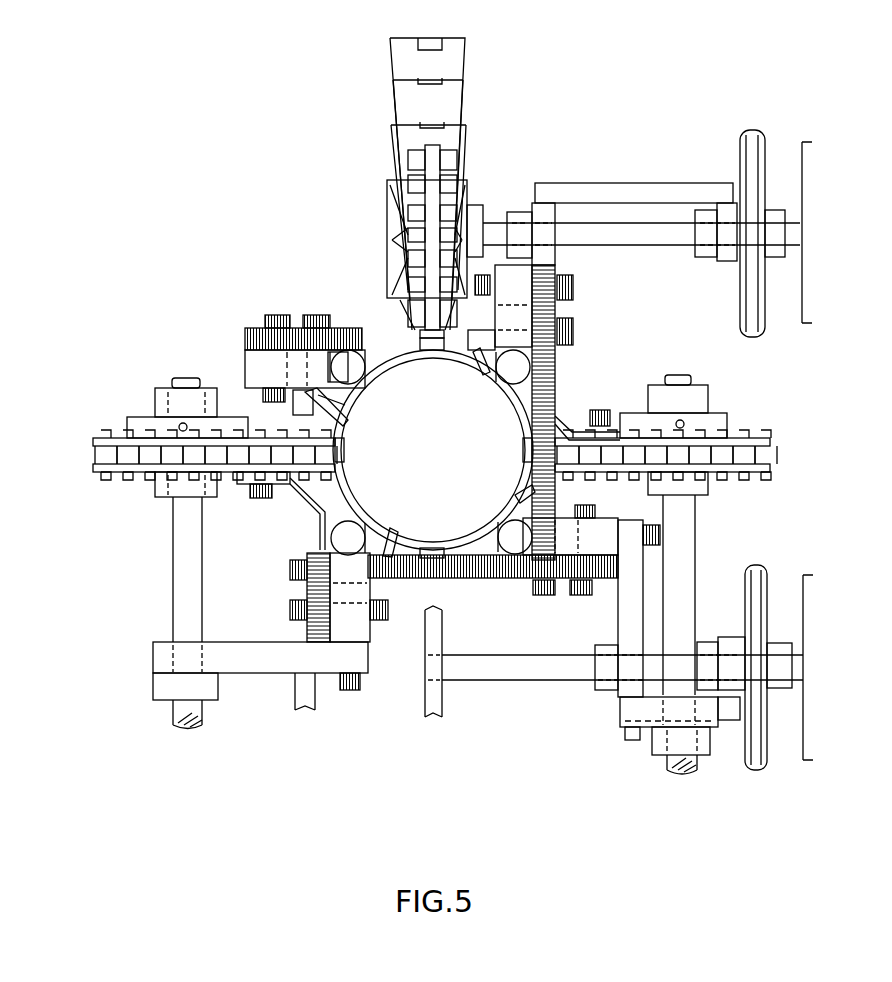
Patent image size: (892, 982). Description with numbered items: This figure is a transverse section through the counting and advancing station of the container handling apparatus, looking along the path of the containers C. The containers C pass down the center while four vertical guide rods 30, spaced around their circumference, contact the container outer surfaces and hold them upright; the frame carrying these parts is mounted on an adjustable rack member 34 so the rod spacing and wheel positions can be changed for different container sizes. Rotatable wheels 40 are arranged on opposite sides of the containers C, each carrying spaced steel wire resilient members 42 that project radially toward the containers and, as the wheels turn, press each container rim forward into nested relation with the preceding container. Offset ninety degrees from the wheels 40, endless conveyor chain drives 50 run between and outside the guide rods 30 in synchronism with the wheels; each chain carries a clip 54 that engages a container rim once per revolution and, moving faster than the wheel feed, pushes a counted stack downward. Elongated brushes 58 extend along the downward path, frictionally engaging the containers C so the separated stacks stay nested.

The guide rods 30 is at (365, 348).
The rack member 34 is at (510, 580).
The rotatable wheel 40 is at (387, 213).
The resilient members 42 is at (458, 50).
The endless conveyor chain drive 50 is at (128, 480).
The clip 54 is at (310, 492).
The elongated brushes 58 is at (350, 408).
The container C is at (345, 450).